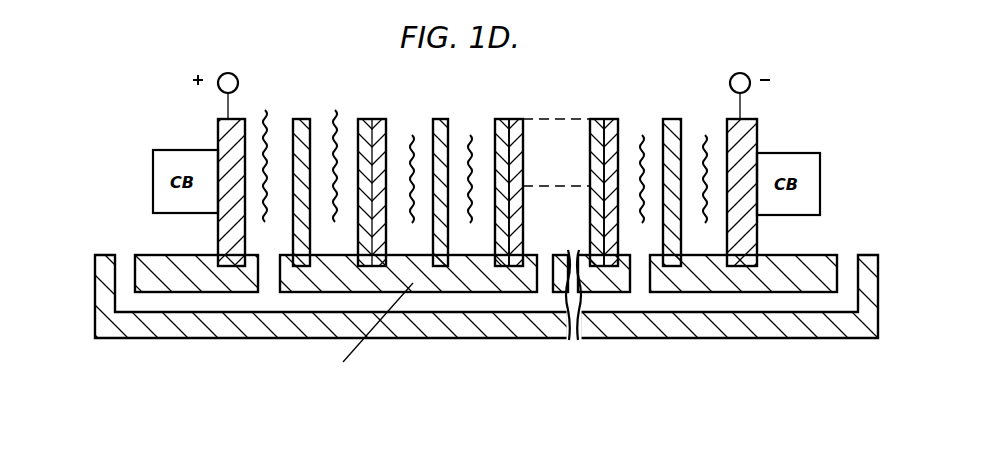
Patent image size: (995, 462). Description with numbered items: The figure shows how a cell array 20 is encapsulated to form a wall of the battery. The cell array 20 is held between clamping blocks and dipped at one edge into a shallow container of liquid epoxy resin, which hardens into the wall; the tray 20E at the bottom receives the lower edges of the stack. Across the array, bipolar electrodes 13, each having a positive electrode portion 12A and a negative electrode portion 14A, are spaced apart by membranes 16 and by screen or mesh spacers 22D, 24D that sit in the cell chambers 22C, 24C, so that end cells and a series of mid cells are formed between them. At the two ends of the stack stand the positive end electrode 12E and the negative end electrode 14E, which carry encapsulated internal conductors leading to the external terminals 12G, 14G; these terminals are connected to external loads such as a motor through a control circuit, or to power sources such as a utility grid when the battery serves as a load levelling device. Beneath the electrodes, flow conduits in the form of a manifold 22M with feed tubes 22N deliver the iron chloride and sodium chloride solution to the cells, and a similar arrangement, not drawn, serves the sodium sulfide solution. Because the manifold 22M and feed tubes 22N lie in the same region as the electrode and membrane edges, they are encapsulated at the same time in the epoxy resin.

The tray / electrolyte container 20E is at (428, 332).
The feed tubes 22N is at (272, 285).
The end electrode 12E is at (218, 130).
The end electrode 14E is at (757, 135).
The membranes 16 is at (300, 119).
The electrodes 13 is at (370, 119).
The negative electrode portion 14A is at (500, 119).
The positive electrode portion 12A is at (517, 119).
The cell array 20 is at (558, 100).
The external terminal 12G is at (225, 74).
The external terminal 14G is at (738, 73).
The screen or mesh spacer 22D is at (265, 110).
The screen or mesh spacer 24D is at (335, 110).
The cell chamber 22C is at (262, 237).
The cell chamber 24C is at (328, 239).
The manifold 22M is at (160, 300).